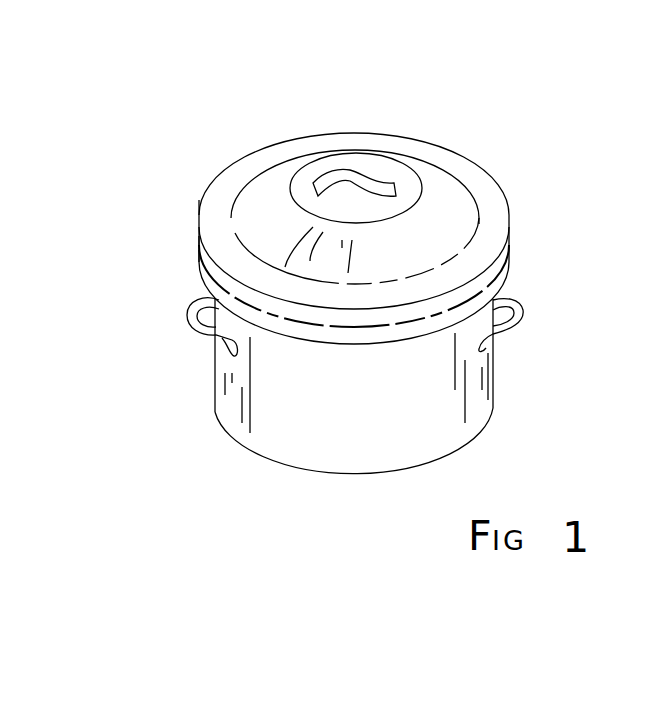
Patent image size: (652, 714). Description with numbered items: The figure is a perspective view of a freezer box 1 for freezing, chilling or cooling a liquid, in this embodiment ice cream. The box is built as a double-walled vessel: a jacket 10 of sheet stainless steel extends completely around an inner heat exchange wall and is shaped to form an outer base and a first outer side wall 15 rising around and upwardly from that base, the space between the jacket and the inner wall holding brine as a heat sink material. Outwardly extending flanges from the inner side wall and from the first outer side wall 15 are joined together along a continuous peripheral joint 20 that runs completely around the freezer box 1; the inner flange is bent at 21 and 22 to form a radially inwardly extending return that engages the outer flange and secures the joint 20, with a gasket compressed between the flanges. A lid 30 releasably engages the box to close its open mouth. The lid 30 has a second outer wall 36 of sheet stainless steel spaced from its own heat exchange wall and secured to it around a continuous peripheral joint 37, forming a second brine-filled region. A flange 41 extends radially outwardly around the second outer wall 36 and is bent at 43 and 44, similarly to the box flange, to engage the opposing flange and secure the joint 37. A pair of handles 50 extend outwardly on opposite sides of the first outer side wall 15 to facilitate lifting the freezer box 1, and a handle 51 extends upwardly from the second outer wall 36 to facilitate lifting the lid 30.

The freezer box 1 is at (186, 126).
The jacket 10 is at (417, 443).
The first outer side wall 15 is at (322, 437).
The continuous peripheral joint 20 is at (510, 263).
The bend 21 is at (512, 249).
The bend 22 is at (510, 283).
The lid 30 is at (440, 163).
The second outer wall 36 is at (287, 173).
The continuous peripheral joint 37 is at (512, 250).
The flange 41 is at (485, 196).
The bend 43 is at (199, 199).
The bend 44 is at (199, 242).
The handles 50 is at (192, 330).
The handle 51 is at (353, 167).